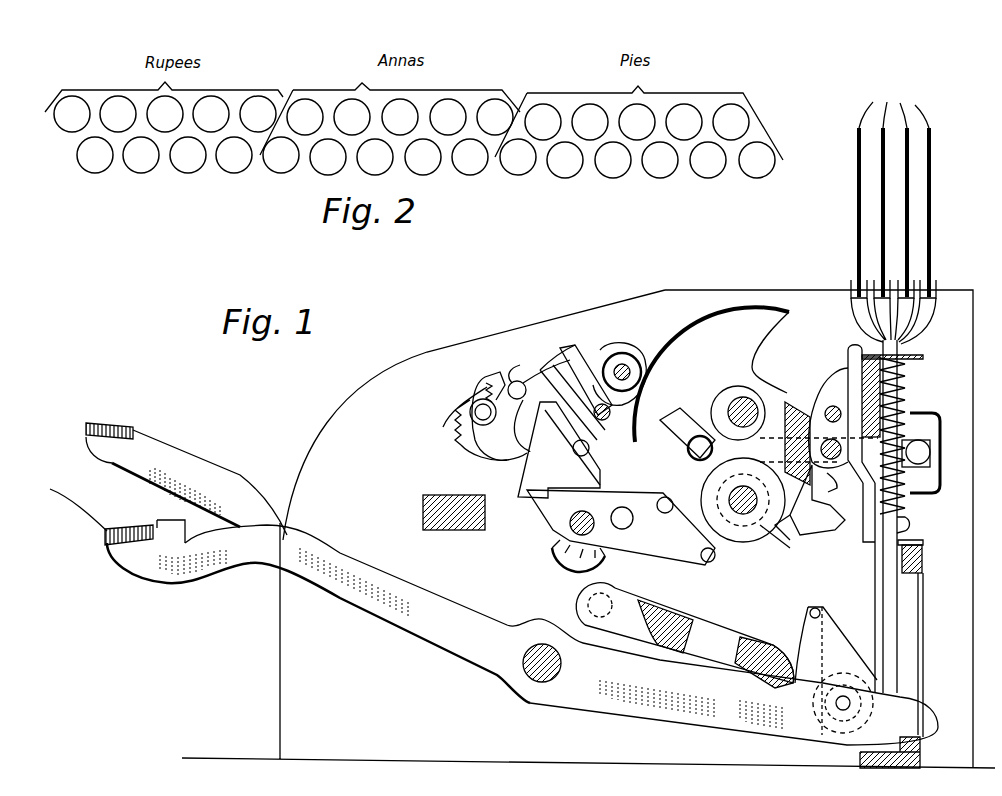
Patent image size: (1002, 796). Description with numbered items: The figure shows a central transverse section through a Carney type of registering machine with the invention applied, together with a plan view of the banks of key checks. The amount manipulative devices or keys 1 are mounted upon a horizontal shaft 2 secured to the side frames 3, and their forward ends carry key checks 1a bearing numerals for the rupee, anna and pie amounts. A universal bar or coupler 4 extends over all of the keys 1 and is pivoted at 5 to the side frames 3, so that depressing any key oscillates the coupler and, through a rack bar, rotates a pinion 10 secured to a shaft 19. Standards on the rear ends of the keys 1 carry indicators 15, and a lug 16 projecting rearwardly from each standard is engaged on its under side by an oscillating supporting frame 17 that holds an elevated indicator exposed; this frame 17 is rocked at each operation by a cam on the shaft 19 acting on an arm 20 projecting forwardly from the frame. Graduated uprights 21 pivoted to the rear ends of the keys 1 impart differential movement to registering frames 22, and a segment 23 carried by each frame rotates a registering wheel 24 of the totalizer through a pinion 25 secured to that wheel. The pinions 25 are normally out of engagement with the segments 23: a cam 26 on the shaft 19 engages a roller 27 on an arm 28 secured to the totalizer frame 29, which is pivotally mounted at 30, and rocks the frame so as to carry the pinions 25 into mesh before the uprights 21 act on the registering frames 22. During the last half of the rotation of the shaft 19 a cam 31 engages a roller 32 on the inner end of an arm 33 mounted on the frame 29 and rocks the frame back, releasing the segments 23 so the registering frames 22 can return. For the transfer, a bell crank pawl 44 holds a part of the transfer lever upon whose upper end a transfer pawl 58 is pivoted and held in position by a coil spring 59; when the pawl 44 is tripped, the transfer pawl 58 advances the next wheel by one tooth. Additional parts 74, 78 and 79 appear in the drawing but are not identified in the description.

In FIG. 1, the amount manipulative devices 1 is at (200, 493).
In FIG. 2, the key checks 1a is at (210, 188).
In FIG. 1, the key checks 1a is at (50, 465).
In FIG. 1, the horizontal shaft 2 is at (535, 670).
In FIG. 1, the side frames 3 is at (522, 635).
In FIG. 1, the universal bar or coupler 4 is at (717, 638).
In FIG. 1, the pivot 5 is at (588, 605).
In FIG. 1, the pinion 10 is at (795, 527).
In FIG. 1, the indicators 15 is at (893, 214).
In FIG. 1, the lug 16 is at (905, 524).
In FIG. 1, the oscillating supporting frame 17 is at (925, 415).
In FIG. 1, the shaft 19 is at (817, 500).
In FIG. 1, the arm 20 is at (859, 429).
In FIG. 1, the graduated uprights 21 is at (830, 583).
In FIG. 1, the registering frames 22 is at (785, 400).
In FIG. 1, the segment 23 is at (705, 318).
In FIG. 1, the registering wheel 24 is at (628, 352).
In FIG. 1, the pinion 25 is at (608, 400).
In FIG. 1, the cam 26 is at (748, 545).
In FIG. 1, the roller 27 is at (720, 570).
In FIG. 1, the arm 28 is at (610, 558).
In FIG. 1, the frame 29 is at (585, 490).
In FIG. 1, the pivot 30 is at (568, 528).
In FIG. 1, the cam 31 is at (780, 540).
In FIG. 1, the roller 32 is at (686, 445).
In FIG. 1, the arm 33 is at (650, 432).
In FIG. 1, the bell crank pawl 44 is at (895, 628).
In FIG. 1, the transfer pawl 58 is at (557, 449).
In FIG. 1, the coil spring 59 is at (453, 425).
In FIG. 1, the pawl 74 is at (480, 388).
In FIG. 1, the pin 78 is at (518, 378).
In FIG. 1, the lever 79 is at (555, 362).